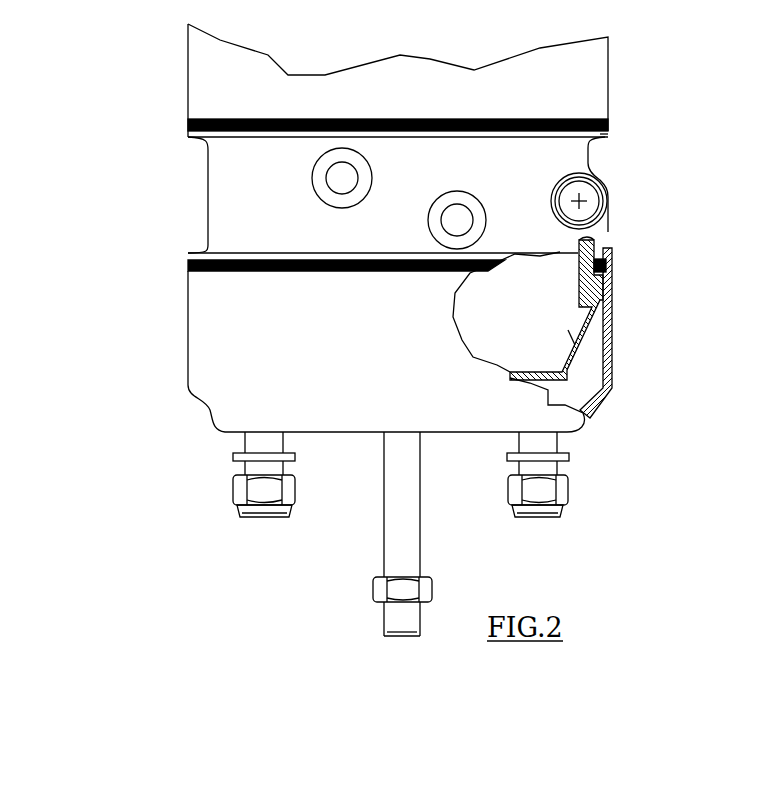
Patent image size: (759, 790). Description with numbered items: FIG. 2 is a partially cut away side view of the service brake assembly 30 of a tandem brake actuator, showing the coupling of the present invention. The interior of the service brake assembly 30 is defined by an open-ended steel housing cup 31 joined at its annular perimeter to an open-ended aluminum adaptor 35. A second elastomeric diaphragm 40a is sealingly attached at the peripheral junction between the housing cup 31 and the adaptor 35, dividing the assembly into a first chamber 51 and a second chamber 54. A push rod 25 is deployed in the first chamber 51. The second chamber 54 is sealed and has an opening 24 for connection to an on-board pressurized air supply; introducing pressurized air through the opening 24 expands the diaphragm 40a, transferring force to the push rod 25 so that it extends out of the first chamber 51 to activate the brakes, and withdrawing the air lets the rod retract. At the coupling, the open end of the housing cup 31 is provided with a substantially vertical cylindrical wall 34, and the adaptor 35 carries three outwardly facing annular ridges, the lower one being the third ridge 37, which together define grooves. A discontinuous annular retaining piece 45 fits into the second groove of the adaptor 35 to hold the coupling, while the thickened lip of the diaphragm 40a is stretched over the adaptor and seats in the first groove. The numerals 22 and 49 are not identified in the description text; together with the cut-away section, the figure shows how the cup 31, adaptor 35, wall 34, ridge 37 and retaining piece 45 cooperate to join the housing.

The housing assembly 22 is at (126, 88).
The opening 24 is at (455, 196).
The push rod 25 is at (405, 517).
The service brake assembly 30 is at (127, 315).
The housing cup 31 is at (213, 368).
The cylindrical wall 34 is at (600, 84).
The adaptor 35 is at (592, 236).
The third annular ridge 37 is at (606, 135).
The second elastomeric diaphragm 40a is at (577, 347).
The retaining piece 45 is at (607, 261).
The gasket 49 is at (606, 123).
The first chamber 51 is at (582, 390).
The second chamber 54 is at (567, 305).